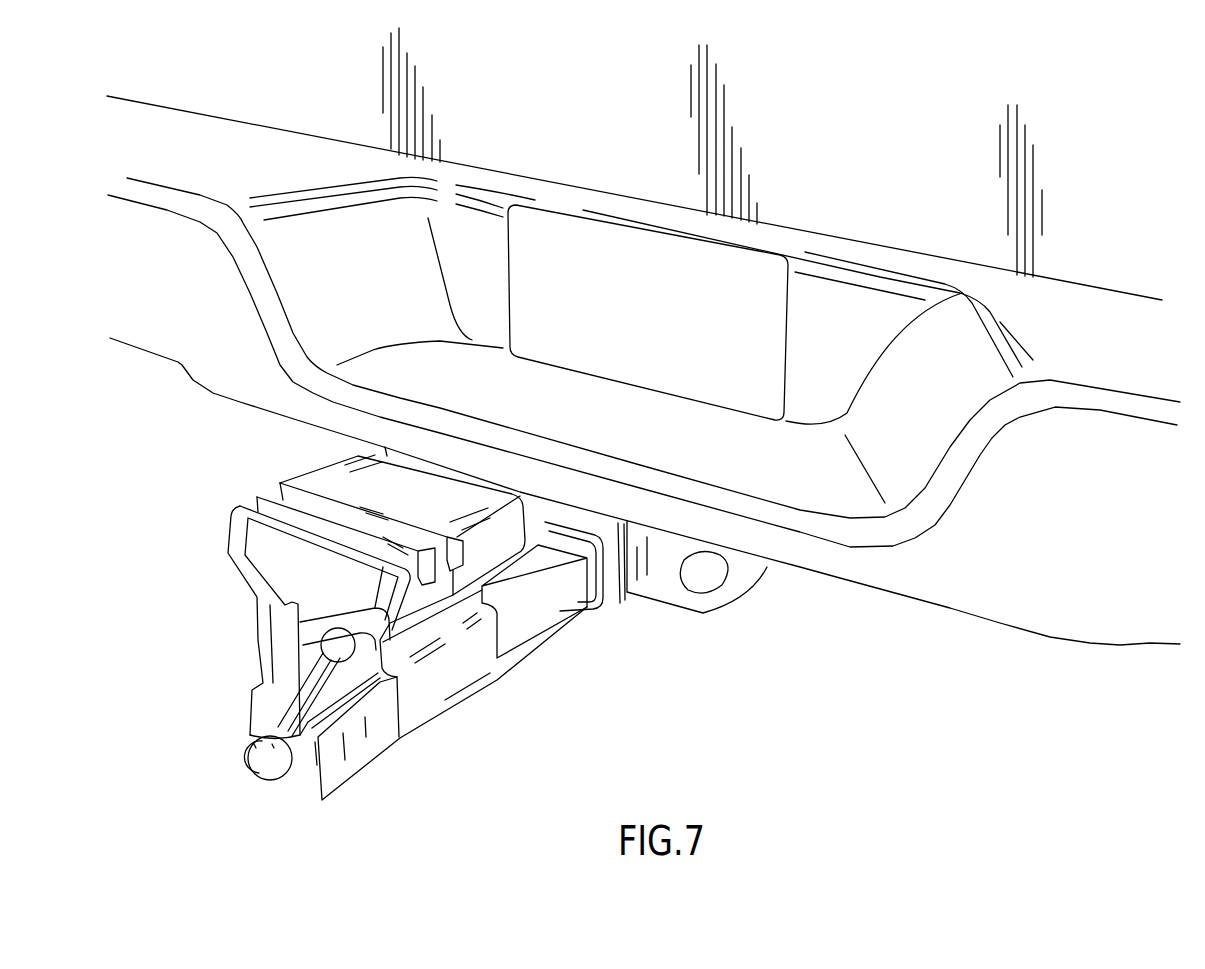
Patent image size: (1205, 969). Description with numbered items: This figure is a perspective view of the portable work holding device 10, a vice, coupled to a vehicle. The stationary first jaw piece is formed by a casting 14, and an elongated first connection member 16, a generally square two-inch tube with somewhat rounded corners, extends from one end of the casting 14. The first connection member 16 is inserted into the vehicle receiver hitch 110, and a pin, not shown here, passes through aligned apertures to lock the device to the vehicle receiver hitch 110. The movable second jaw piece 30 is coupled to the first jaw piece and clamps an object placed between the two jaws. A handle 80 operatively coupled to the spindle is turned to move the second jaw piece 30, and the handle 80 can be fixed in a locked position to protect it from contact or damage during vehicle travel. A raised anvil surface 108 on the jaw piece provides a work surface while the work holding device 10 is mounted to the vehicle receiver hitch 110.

The work holding device 10 is at (225, 648).
The casting 14 is at (457, 697).
The first connection member 16 is at (525, 627).
The second jaw piece 30 is at (367, 755).
The handle 80 is at (255, 778).
The anvil surface 108 is at (322, 484).
The vehicle receiver hitch 110 is at (608, 610).